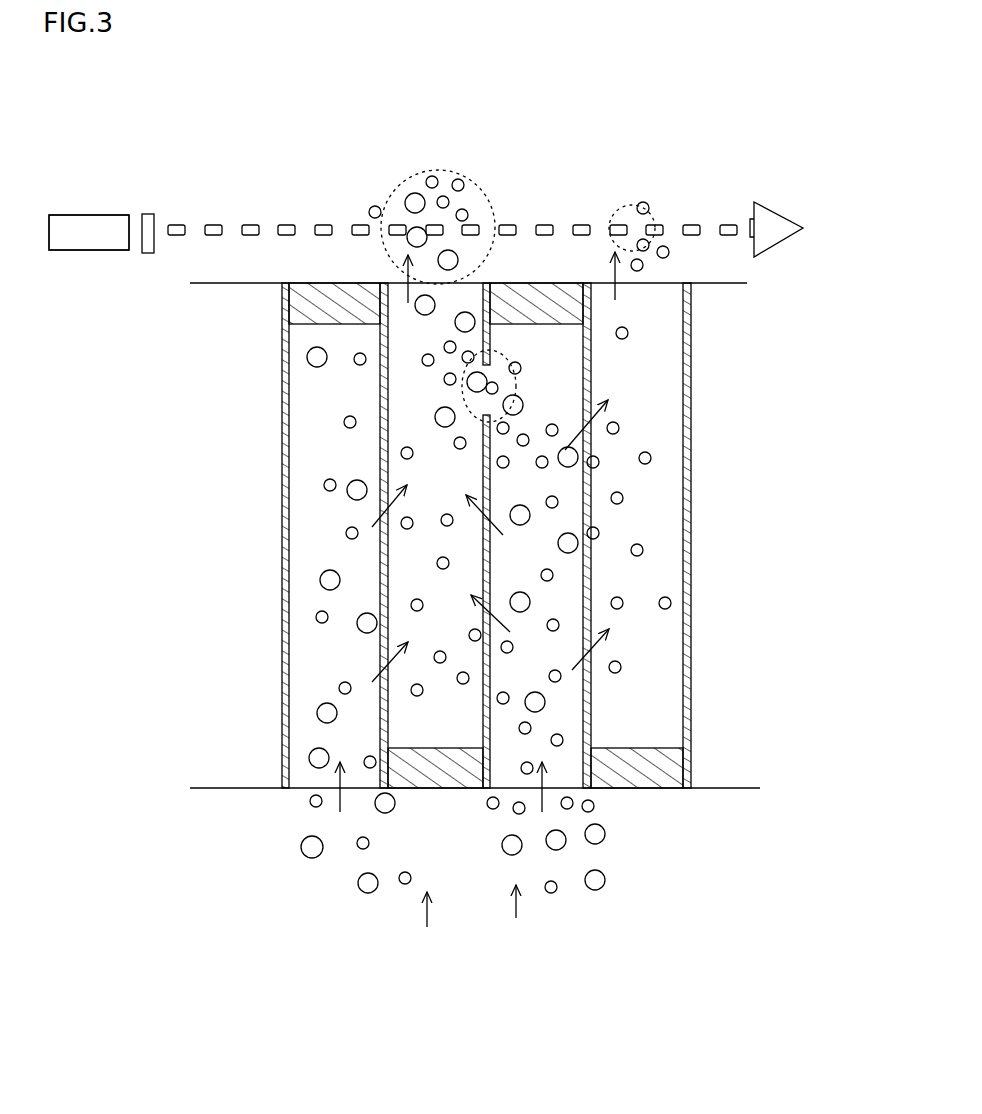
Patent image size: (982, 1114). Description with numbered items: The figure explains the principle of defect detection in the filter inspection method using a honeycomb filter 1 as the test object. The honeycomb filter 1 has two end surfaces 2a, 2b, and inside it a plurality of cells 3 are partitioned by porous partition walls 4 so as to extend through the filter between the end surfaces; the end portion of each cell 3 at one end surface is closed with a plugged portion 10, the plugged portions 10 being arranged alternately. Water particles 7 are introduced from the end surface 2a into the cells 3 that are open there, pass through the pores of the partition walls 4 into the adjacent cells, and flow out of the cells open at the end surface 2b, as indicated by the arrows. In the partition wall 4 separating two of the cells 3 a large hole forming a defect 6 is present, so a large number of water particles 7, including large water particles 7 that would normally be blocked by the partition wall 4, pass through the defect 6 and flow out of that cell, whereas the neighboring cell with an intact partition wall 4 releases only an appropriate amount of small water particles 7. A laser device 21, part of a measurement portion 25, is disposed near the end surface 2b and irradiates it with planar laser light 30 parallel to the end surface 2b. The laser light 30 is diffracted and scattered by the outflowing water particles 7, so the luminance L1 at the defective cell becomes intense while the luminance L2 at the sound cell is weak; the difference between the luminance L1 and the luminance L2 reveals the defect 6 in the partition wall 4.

The measurement portion 25 is at (72, 107).
The laser device 21 is at (77, 215).
The laser light 30 is at (727, 226).
The luminance at position of cell 3b L1 is at (472, 173).
The luminance at position of cell 3d L2 is at (632, 207).
The end surface 2b is at (486, 283).
The end surface 2a is at (496, 789).
The honeycomb filter 1 is at (735, 594).
The partition wall 4 is at (495, 487).
The plugged portion 10 is at (325, 306).
The cell 3 is at (410, 563).
The defect 6 is at (513, 387).
The water particles 7 is at (312, 858).